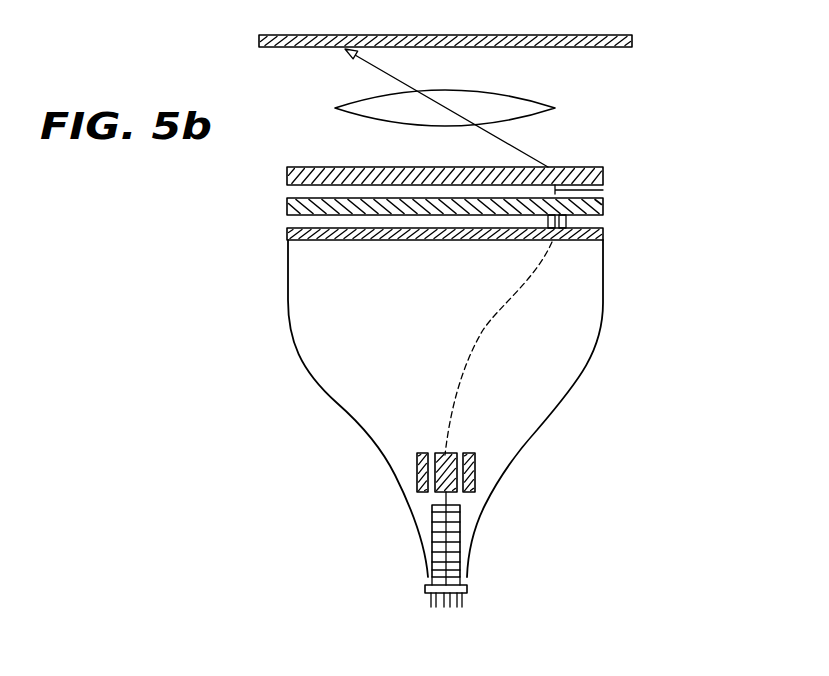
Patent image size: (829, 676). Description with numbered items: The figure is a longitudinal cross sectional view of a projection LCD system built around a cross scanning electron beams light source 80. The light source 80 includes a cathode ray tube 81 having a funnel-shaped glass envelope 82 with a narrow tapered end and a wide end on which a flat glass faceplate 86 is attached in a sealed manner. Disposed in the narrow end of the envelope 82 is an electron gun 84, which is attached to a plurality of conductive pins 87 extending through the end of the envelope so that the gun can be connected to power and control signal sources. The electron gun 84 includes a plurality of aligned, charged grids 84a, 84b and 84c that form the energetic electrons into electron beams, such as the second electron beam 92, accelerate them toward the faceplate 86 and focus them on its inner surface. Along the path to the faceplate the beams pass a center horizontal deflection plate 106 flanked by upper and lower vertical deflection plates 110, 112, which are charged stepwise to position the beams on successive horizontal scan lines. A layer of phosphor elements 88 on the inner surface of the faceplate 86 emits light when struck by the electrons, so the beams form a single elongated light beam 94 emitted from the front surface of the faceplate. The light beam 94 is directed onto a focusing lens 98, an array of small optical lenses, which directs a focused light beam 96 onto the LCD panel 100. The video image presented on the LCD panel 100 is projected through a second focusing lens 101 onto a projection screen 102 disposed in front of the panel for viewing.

The cross scanning electron beams light source 80 is at (633, 407).
The cathode ray tube 81 is at (270, 298).
The glass envelope 82 is at (308, 370).
The electron gun 84 is at (432, 563).
The charged grid 84a is at (457, 510).
The charged grid 84b is at (457, 520).
The charged grid 84c is at (457, 530).
The glass faceplate 86 is at (603, 226).
The conductive pins 87 is at (466, 605).
The layer of phosphor elements 88 is at (590, 240).
The second electron beam 92 is at (487, 333).
The single elongated light beam 94 is at (567, 222).
The focused light beam 96 is at (600, 190).
The focusing lens 98 is at (603, 207).
The LCD panel 100 is at (575, 167).
The second focusing lens 101 is at (542, 104).
The projection screen 102 is at (632, 41).
The center horizontal deflection plate 106 is at (432, 505).
The upper vertical deflection plate 110 is at (477, 457).
The lower vertical deflection plate 112 is at (417, 457).